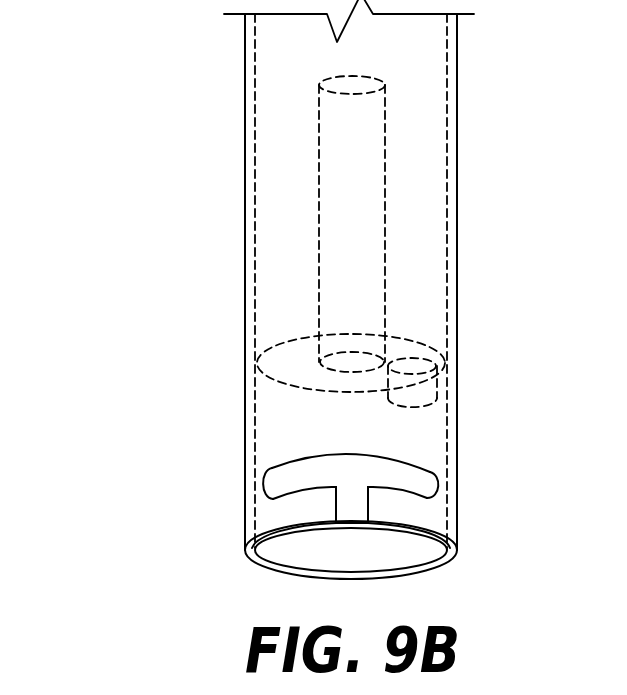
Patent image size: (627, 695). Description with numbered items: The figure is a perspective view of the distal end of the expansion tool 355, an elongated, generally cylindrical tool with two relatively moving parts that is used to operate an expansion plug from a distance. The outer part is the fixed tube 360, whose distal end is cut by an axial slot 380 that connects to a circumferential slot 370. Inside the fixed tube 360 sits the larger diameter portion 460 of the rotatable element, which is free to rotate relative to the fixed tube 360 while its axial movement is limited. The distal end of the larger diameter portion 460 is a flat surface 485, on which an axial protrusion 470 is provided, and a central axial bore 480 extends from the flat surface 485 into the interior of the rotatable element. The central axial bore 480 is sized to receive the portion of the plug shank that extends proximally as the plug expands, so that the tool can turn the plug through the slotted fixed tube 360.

The expansion tool 355 is at (329, 289).
The larger diameter portion 460 is at (448, 130).
The central axial bore 480 is at (317, 265).
The flat surface 485 is at (299, 366).
The axial protrusion 470 is at (433, 397).
The fixed tube 360 is at (458, 475).
The circumferential slot 370 is at (265, 483).
The axial slot 380 is at (368, 503).